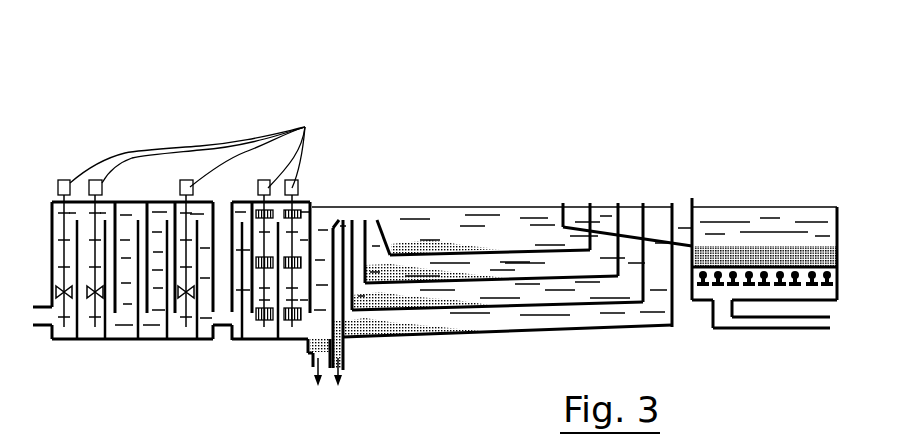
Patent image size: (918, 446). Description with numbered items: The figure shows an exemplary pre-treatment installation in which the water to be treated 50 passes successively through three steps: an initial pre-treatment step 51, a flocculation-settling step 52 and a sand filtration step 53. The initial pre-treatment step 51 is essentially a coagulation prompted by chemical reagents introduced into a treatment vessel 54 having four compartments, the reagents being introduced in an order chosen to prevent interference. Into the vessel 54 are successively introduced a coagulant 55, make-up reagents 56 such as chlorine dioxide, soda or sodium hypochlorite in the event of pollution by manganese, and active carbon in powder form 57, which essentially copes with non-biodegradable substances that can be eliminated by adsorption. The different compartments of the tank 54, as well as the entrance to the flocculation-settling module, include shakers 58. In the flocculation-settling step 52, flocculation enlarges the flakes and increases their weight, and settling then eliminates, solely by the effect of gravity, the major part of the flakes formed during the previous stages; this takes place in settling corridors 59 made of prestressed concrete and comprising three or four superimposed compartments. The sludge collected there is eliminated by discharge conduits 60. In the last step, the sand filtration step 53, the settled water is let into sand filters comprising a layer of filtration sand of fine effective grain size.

The water to be treated 50 is at (38, 329).
The initial pre-treatment step 51 is at (52, 78).
The flocculation-settling step 52 is at (672, 78).
The sand filtration step 53 is at (672, 67).
The treatment vessel 54 is at (127, 343).
The coagulant 55 is at (55, 196).
The make-up reagents 56 is at (86, 196).
The active carbon in powder form 57 is at (178, 197).
The shakers 58 is at (201, 212).
The settling corridors 59 is at (470, 190).
The discharge conduits 60 is at (333, 380).